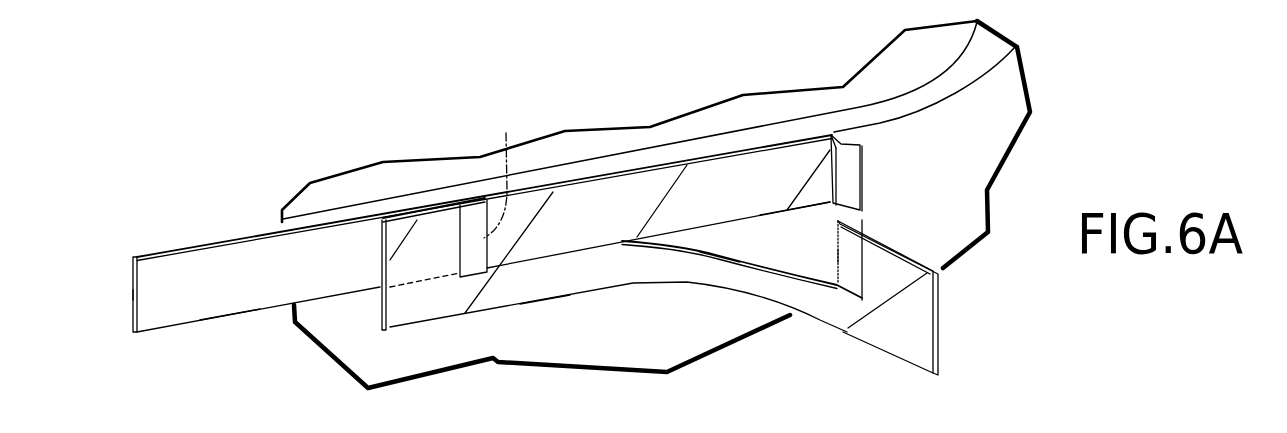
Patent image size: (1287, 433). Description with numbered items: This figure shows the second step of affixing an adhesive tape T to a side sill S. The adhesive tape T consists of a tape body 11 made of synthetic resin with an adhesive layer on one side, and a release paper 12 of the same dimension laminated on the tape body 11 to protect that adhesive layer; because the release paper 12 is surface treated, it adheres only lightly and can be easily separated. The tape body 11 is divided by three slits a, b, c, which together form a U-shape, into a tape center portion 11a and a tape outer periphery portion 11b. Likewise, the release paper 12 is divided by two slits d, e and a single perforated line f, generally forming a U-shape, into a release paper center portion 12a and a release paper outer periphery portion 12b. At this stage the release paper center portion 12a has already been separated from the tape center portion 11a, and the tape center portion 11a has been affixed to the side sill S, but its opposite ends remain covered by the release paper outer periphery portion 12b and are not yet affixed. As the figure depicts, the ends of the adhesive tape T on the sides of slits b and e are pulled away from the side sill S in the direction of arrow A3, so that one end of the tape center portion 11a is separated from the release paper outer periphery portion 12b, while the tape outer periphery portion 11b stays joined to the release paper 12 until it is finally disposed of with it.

The tape body 11 is at (626, 221).
The tape center portion 11a is at (738, 170).
The tape outer periphery portion 11b is at (748, 296).
The release paper 12 is at (569, 233).
The release paper center portion 12a is at (207, 252).
The release paper outer periphery portion 12b is at (855, 254).
The arrow A3 is at (873, 170).
The side sill S is at (708, 335).
The adhesive tape T is at (543, 314).
The slit a is at (788, 211).
The slit b is at (867, 163).
The slit c is at (460, 243).
The slit d is at (238, 314).
The slit e is at (128, 297).
The perforated line f is at (498, 169).